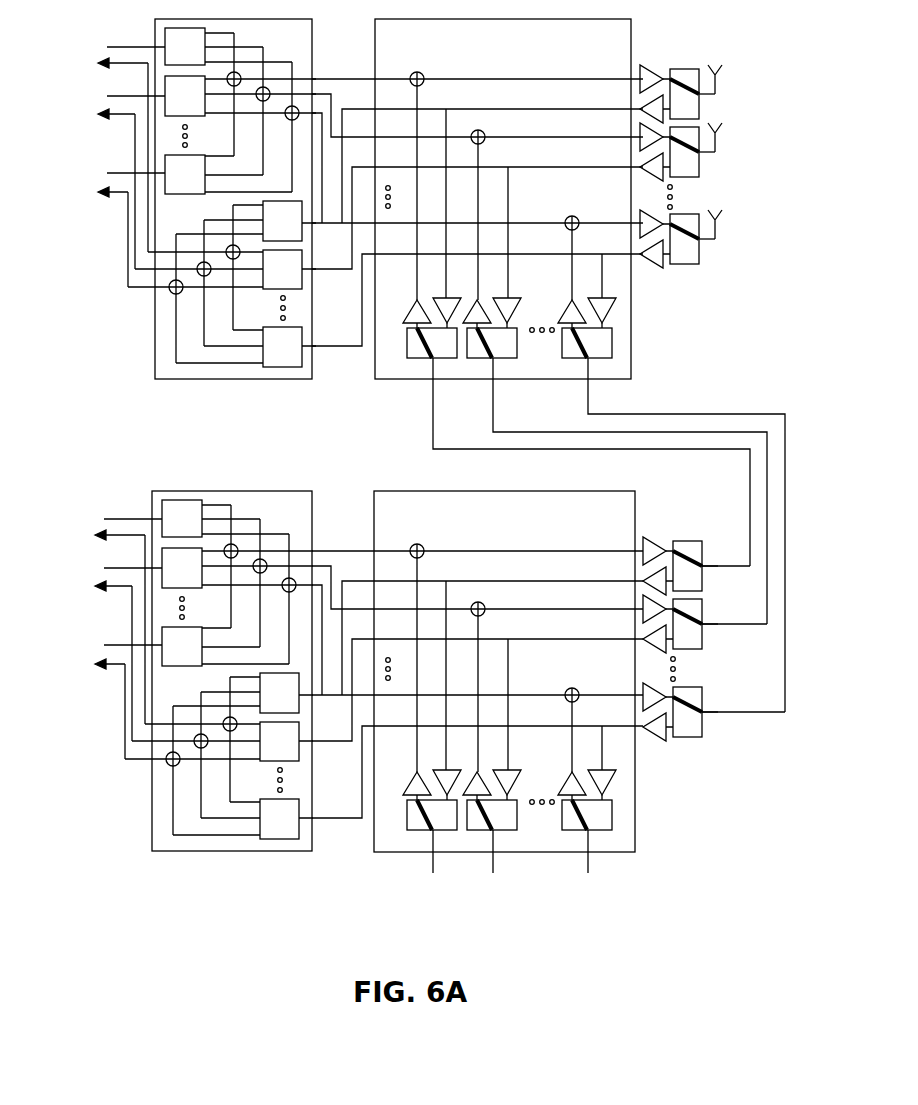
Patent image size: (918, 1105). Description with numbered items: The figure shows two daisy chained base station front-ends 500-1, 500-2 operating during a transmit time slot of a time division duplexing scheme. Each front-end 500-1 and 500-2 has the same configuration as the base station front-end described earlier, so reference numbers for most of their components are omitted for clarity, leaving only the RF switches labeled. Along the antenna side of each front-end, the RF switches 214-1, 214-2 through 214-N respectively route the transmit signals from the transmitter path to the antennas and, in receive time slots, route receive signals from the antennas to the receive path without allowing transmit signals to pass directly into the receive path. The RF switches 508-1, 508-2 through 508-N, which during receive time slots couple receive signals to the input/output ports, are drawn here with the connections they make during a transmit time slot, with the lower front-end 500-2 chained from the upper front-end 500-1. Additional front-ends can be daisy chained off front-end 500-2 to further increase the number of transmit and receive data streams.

The RF switch 214-1 is at (694, 102).
The RF switch 214-2 is at (694, 160).
The RF switch 214-N is at (694, 247).
The RF switch 508-1 is at (417, 346).
The RF switch 508-2 is at (504, 338).
The RF switch 508-N is at (599, 338).
The BS front-end 500-1 is at (180, 413).
The BS front-end 500-2 is at (180, 883).